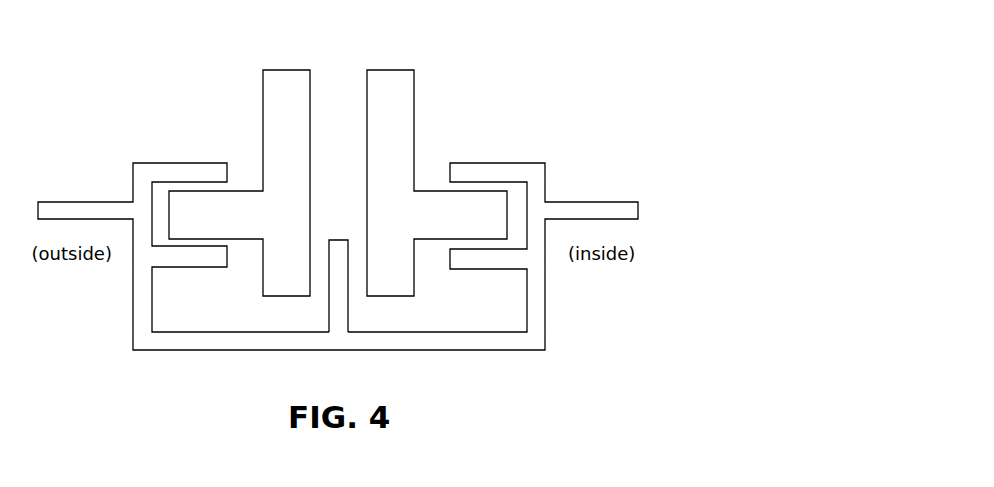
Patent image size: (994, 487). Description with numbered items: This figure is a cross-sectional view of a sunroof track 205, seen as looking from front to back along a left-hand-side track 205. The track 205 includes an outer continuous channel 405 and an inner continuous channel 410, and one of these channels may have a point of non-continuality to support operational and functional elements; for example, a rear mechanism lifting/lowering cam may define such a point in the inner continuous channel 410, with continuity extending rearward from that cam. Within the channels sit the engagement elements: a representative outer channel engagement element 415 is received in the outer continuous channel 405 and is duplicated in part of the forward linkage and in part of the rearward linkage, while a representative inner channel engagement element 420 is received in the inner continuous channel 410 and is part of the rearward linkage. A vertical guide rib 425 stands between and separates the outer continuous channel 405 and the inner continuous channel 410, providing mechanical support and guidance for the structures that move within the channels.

The sunroof track 205 is at (580, 66).
The outer continuous channel 405 is at (162, 200).
The inner continuous channel 410 is at (517, 200).
The outer channel engagement element 415 is at (263, 106).
The inner channel engagement element 420 is at (414, 106).
The vertical guide rib 425 is at (336, 305).